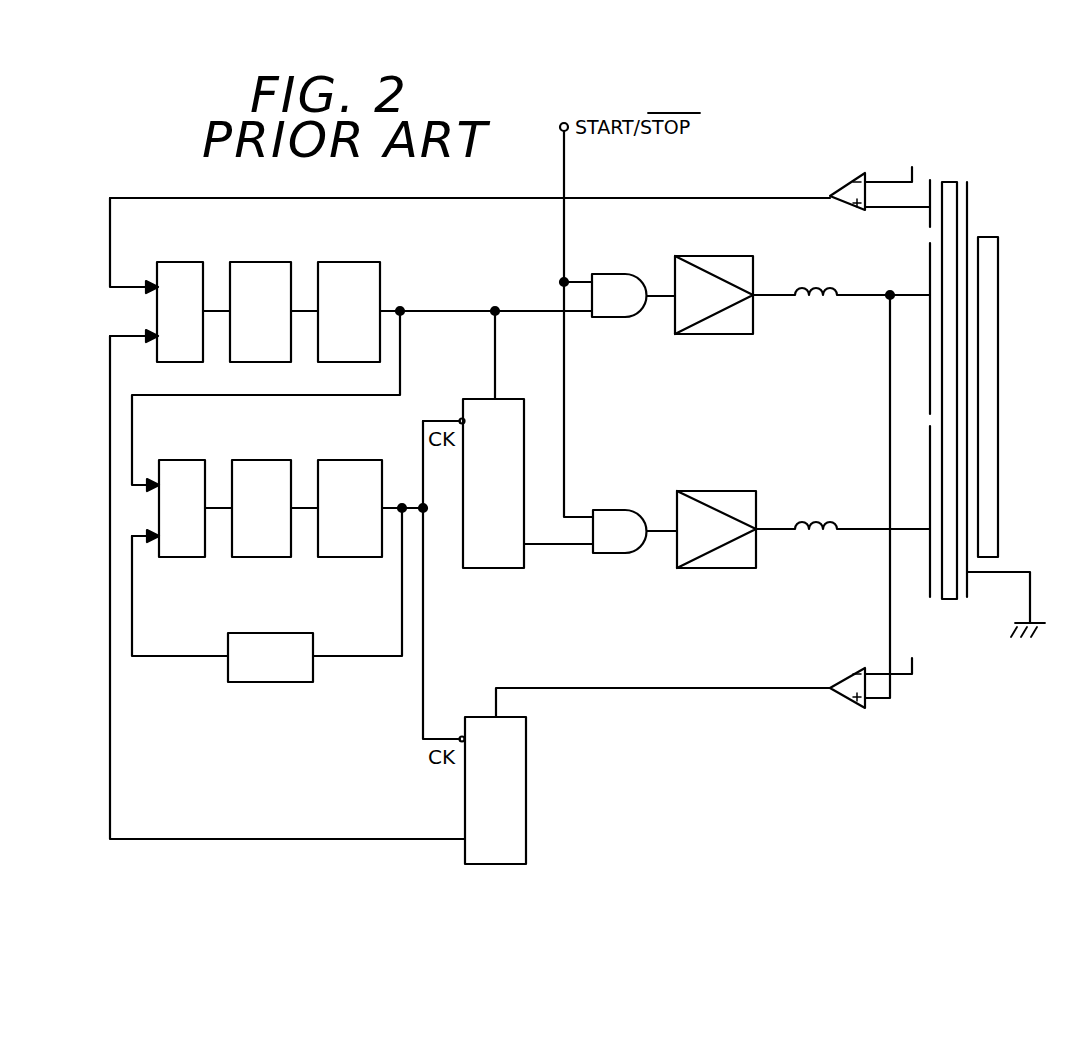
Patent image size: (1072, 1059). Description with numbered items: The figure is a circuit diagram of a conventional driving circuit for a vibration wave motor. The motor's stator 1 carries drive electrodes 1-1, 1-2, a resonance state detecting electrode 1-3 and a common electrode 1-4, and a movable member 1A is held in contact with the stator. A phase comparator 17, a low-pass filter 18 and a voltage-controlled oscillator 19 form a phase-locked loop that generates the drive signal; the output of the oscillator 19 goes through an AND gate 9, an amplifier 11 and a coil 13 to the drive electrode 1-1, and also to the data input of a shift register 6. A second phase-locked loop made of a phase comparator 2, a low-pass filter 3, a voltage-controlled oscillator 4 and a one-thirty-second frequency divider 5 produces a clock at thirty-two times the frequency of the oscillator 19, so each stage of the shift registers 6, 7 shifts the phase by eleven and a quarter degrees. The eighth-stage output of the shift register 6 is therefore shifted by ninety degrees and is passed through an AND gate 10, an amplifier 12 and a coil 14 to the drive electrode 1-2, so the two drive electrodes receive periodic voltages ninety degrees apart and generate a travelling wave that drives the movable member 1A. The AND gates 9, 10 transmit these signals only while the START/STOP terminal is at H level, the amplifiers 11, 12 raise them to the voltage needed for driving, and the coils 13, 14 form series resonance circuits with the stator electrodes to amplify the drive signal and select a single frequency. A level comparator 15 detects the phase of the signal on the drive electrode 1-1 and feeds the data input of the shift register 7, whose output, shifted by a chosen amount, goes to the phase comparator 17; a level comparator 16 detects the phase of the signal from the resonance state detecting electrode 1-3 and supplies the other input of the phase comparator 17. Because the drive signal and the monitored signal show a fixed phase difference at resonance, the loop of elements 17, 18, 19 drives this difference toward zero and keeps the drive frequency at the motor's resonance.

The stator 1 is at (949, 182).
The drive electrode 1-1 is at (930, 266).
The drive electrode 1-2 is at (930, 500).
The resonance state detecting electrode 1-3 is at (930, 220).
The common electrode 1-4 is at (967, 190).
The movable member 1A is at (998, 306).
The phase comparator 2 is at (195, 460).
The low-pass filter 3 is at (283, 460).
The voltage-controlled oscillator 4 is at (374, 460).
The 1/32 frequency divider 5 is at (301, 633).
The shift register 6 is at (513, 399).
The shift register 7 is at (526, 724).
The AND gate 9 is at (614, 274).
The AND gate 10 is at (622, 510).
The amplifier 11 is at (743, 256).
The amplifier 12 is at (741, 491).
The coil 13 is at (818, 288).
The coil 14 is at (819, 522).
The level comparator 15 is at (851, 680).
The level comparator 16 is at (850, 186).
The phase comparator 17 is at (190, 262).
The low-pass filter 18 is at (272, 262).
The voltage-controlled oscillator 19 is at (365, 262).